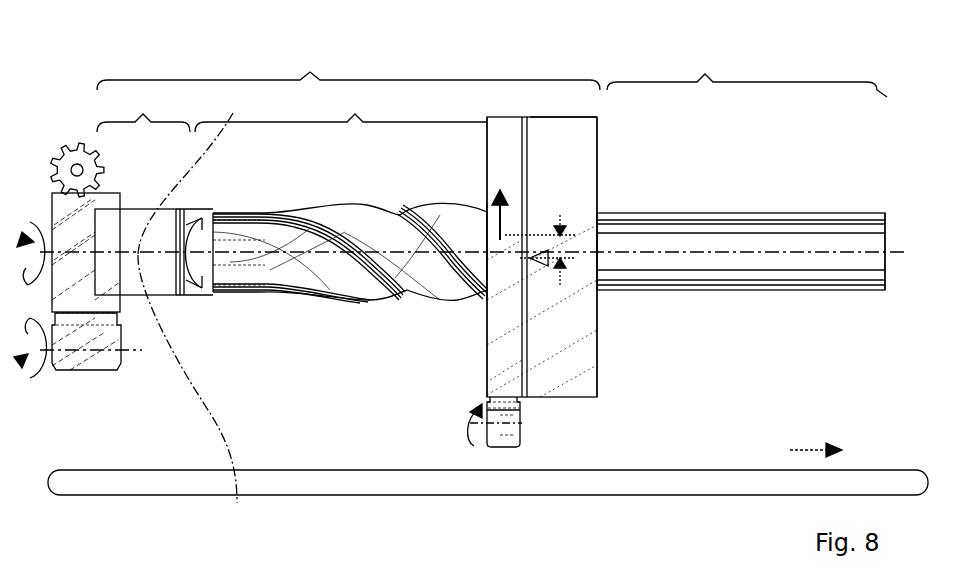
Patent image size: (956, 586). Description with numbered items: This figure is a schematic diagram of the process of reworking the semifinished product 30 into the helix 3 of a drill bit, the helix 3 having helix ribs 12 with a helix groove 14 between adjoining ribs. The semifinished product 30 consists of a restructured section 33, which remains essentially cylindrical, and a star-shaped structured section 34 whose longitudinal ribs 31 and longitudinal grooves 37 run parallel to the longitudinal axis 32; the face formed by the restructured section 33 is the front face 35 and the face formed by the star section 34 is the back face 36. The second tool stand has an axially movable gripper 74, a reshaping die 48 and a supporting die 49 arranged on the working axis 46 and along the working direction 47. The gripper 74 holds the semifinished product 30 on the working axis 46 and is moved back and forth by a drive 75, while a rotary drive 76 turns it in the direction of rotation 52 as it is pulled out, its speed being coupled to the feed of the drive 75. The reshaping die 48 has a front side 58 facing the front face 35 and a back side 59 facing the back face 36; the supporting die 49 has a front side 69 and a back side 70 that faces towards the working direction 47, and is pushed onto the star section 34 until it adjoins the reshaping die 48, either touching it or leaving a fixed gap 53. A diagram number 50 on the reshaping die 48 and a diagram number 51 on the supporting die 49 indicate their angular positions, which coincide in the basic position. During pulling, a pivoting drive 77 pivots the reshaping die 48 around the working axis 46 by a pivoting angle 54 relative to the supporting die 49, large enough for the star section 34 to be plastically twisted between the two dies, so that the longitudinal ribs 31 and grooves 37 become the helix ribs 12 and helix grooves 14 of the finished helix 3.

The helix 3 is at (348, 65).
The helix ribs 12 is at (350, 217).
The helix groove 14 is at (408, 222).
The semifinished product 30 is at (745, 164).
The longitudinal ribs 31 is at (753, 213).
The longitudinal axis 32 is at (193, 170).
The restructured section 33 is at (143, 109).
The star-shaped structured section 34 is at (341, 109).
The front face 35 is at (110, 256).
The back face 36 is at (893, 244).
The longitudinal grooves 37 is at (691, 232).
The working axis 46 is at (197, 393).
The working direction 47 is at (810, 450).
The reshaping die 48 is at (503, 118).
The supporting die 49 is at (549, 118).
The diagram number 50 is at (510, 238).
The diagram number 51 is at (533, 260).
The direction of rotation 52 is at (487, 207).
The gap 53 is at (523, 406).
The pivoting angle 54 is at (562, 262).
The front side 58 is at (488, 152).
The back side 59 is at (530, 147).
The front side 69 is at (537, 163).
The back side 70 is at (606, 150).
The gripper 74 is at (90, 303).
The drive 75 is at (77, 162).
The rotary drive 76 is at (88, 367).
The pivoting drive 77 is at (503, 435).